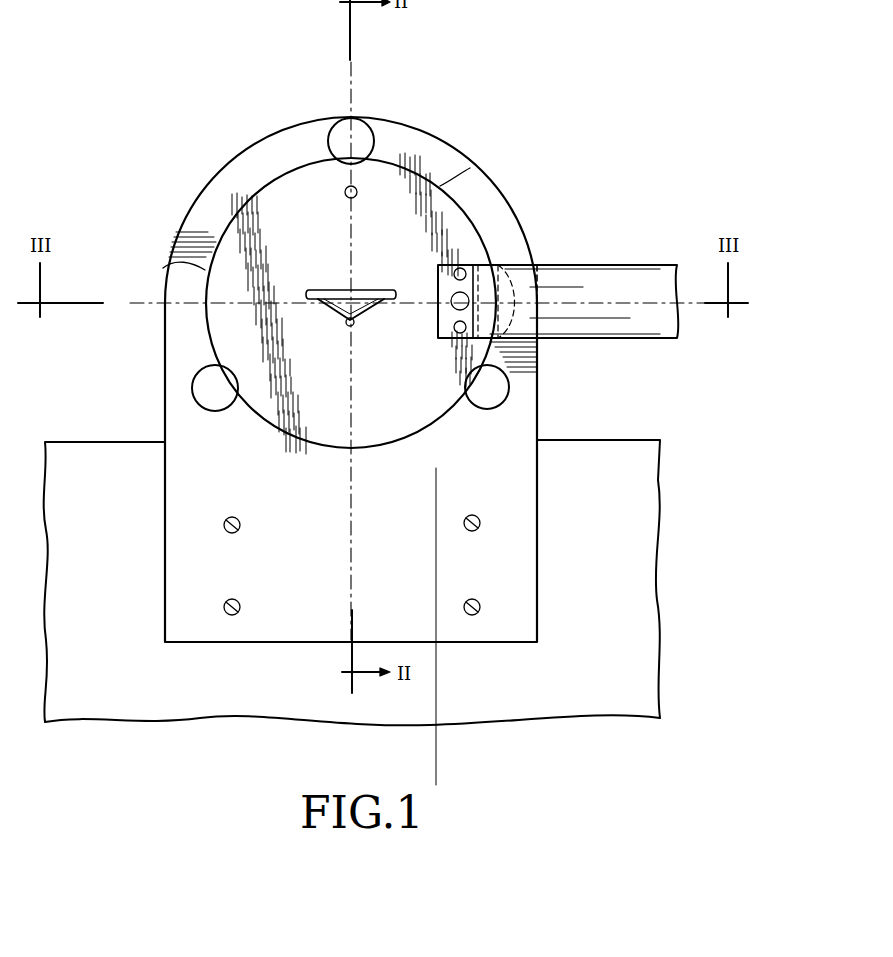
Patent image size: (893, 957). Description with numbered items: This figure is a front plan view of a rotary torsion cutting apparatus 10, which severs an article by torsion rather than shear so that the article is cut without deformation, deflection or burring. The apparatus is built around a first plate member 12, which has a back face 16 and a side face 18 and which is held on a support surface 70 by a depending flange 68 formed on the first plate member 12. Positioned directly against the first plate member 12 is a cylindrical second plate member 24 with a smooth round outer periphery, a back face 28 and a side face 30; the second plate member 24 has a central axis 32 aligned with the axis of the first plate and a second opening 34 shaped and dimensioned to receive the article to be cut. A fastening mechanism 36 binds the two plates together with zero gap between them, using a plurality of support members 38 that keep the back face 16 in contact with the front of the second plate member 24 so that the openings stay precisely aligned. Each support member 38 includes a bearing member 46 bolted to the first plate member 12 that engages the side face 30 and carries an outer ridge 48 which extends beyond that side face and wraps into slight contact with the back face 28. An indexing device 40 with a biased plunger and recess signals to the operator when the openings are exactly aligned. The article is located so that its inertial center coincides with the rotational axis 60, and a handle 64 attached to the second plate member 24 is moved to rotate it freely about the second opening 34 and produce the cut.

The rotary torsion cutting apparatus 10 is at (575, 160).
The first plate member 12 is at (197, 203).
The back face 16 is at (270, 160).
The side face 18 is at (165, 475).
The second plate member 24 is at (484, 191).
The back face 28 is at (468, 234).
The side face 30 is at (205, 262).
The central axis 32 is at (358, 297).
The second opening 34 is at (347, 324).
The fastening mechanism 36 is at (345, 114).
The support member 38 is at (368, 128).
The indexing device 40 is at (358, 193).
The bearing member 46 is at (373, 143).
The outer ridge 48 is at (344, 160).
The rotational axis 60 is at (338, 290).
The handle 64 is at (640, 268).
The depending flange 68 is at (193, 578).
The support surface 70 is at (660, 550).